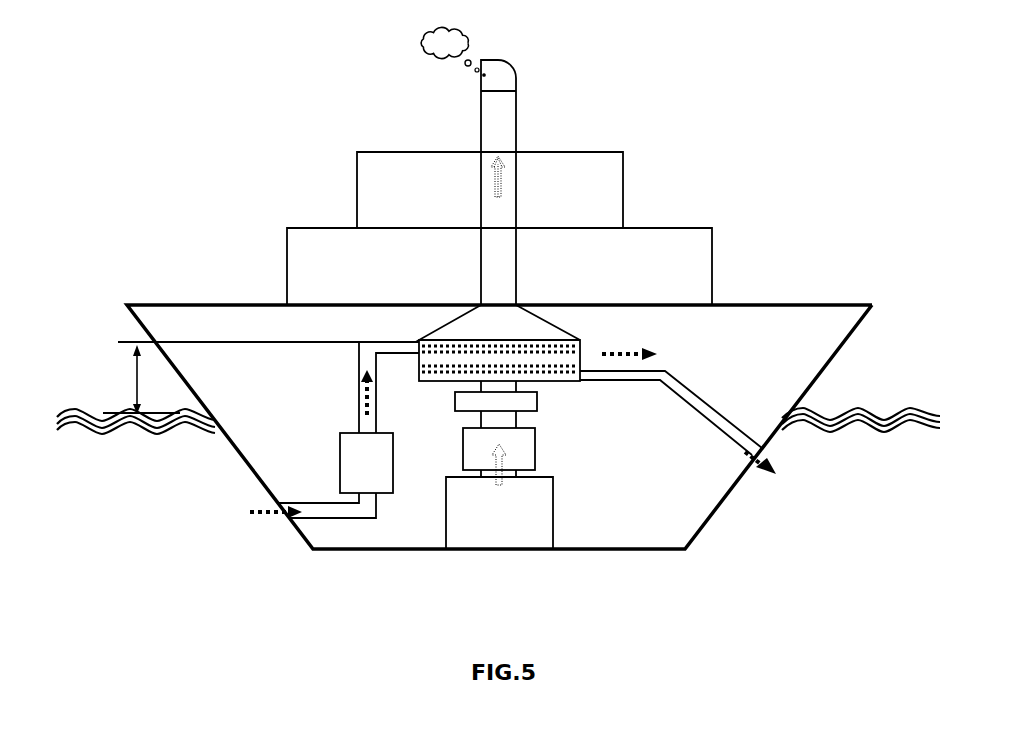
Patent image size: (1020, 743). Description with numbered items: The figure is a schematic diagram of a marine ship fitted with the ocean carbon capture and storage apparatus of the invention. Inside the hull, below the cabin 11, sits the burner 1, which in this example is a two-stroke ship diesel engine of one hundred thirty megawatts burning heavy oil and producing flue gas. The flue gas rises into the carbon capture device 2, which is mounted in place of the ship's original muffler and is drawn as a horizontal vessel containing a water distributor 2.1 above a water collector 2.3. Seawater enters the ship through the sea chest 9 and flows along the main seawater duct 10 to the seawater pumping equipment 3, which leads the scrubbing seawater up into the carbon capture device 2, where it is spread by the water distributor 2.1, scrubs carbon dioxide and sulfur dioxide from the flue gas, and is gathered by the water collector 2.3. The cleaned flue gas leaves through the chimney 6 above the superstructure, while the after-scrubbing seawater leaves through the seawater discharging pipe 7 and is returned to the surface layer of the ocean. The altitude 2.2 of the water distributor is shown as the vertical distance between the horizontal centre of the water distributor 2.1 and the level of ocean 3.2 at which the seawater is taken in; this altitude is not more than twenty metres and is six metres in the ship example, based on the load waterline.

The burner 1 is at (499, 537).
The carbon capture device 2 is at (529, 348).
The water distributor 2.1 is at (531, 332).
The altitude of water distributor 2.2 is at (113, 379).
The water collector 2.3 is at (519, 398).
The seawater pumping equipment 3 is at (353, 417).
The level of ocean 3.2 is at (498, 407).
The chimney 6 is at (492, 166).
The seawater discharging pipe 7 is at (678, 409).
The sea chest 9 is at (266, 538).
The main seawater duct of ship 10 is at (336, 545).
The cabin 11 is at (495, 398).